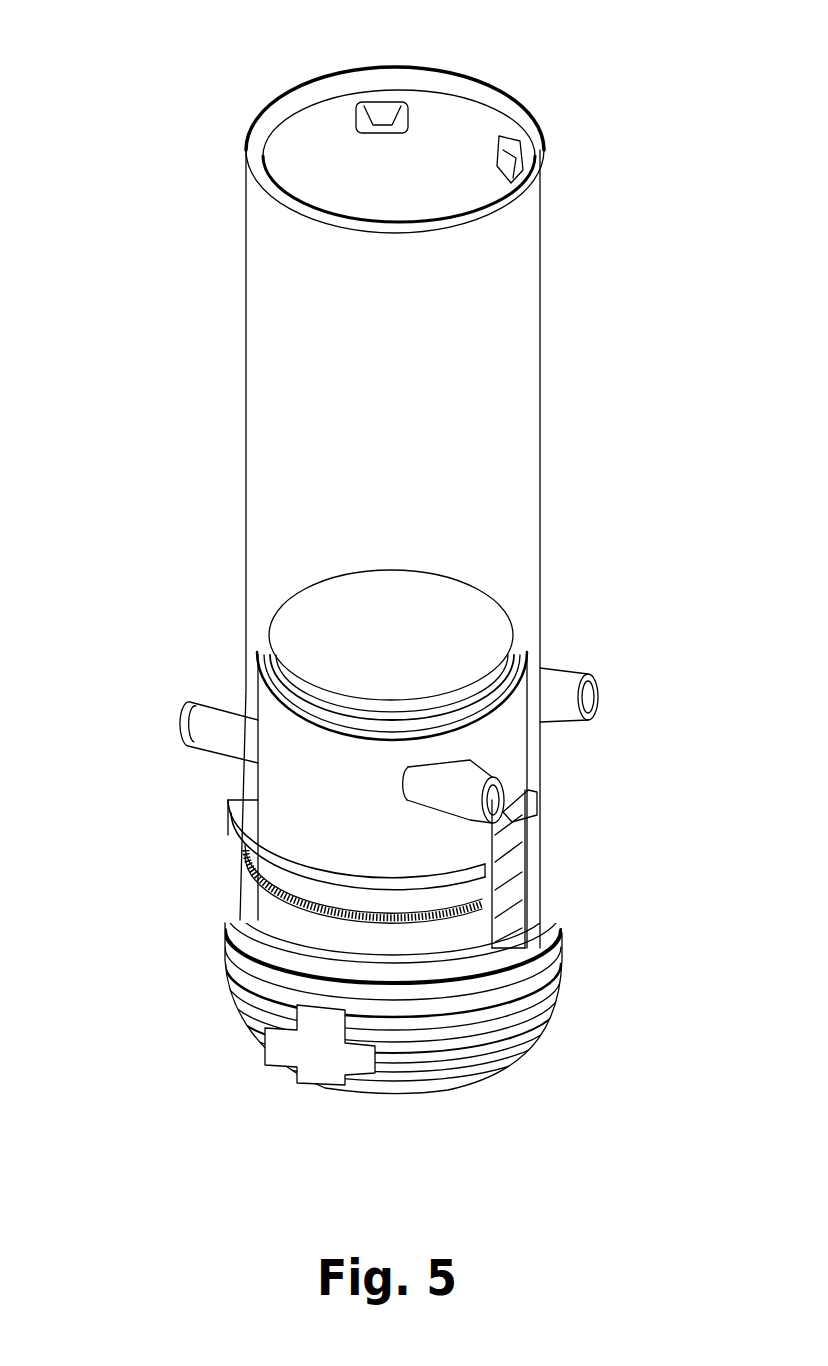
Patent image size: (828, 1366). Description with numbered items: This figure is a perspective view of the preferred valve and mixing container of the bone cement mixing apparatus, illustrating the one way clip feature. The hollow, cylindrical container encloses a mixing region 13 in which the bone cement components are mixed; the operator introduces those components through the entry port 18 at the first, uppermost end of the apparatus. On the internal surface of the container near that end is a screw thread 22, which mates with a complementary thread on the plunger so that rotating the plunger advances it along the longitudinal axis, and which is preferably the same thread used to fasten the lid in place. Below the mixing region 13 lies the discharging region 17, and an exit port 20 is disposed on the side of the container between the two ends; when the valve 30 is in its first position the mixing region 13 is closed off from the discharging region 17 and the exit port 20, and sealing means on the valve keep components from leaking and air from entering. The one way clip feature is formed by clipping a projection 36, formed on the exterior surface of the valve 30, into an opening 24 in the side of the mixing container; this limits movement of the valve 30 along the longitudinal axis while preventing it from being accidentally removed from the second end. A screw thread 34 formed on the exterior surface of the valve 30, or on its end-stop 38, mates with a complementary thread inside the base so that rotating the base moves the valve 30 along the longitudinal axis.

The mixing region 13 is at (310, 274).
The entry port 18 is at (430, 162).
The screw thread 22 is at (382, 110).
The discharging region 17 is at (245, 780).
The exit port 20 is at (600, 691).
The projection 36 is at (540, 810).
The opening 24 is at (513, 868).
The valve 30 is at (277, 907).
The screw thread 34 is at (222, 975).
The end-stop 38 is at (513, 982).